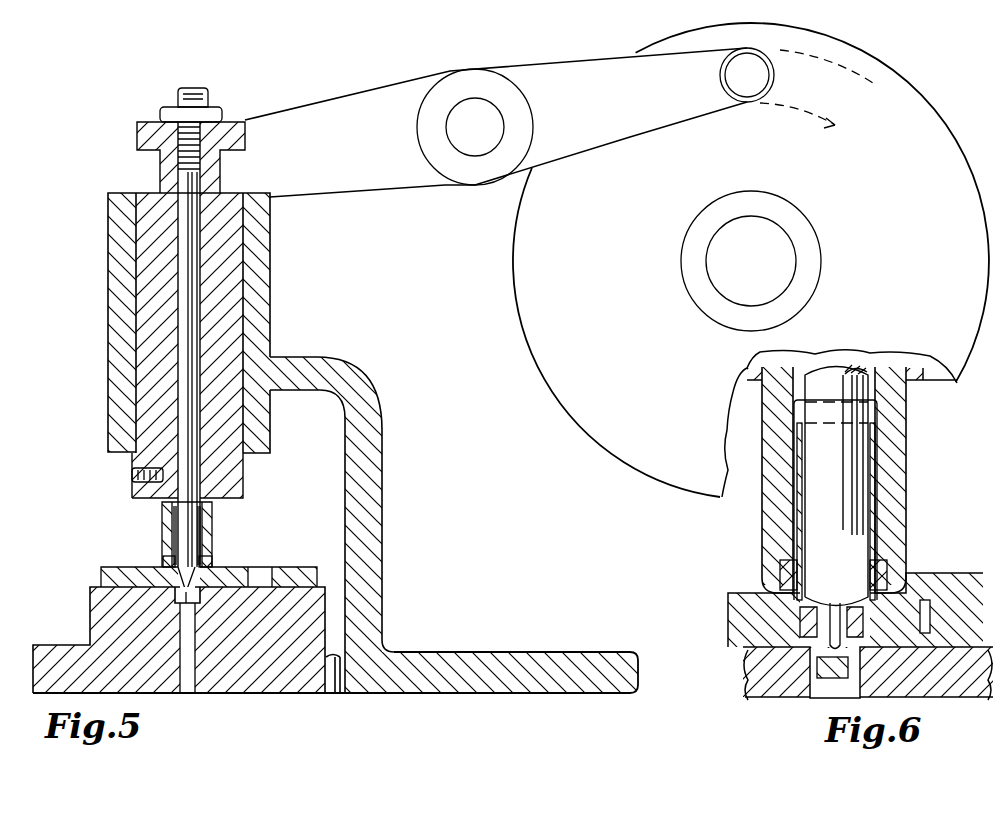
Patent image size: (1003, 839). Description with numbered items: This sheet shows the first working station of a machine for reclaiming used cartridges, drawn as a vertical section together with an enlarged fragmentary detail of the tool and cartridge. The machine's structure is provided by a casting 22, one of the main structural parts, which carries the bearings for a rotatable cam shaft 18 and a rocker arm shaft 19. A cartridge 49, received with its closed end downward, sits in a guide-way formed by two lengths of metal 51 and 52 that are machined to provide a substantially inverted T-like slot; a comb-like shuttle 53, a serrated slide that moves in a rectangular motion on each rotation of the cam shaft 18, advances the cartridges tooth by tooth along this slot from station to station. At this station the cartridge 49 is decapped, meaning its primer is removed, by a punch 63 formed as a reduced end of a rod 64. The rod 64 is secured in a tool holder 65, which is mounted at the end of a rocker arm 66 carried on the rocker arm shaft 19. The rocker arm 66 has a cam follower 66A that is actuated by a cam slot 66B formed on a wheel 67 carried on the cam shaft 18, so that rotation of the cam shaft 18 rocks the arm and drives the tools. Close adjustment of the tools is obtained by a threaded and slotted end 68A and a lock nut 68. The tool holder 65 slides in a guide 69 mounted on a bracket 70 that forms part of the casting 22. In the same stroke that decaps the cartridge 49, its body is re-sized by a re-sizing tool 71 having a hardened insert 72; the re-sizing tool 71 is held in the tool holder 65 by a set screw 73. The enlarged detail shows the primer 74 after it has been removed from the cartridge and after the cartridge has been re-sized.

In FIG. 5, the cam shaft 18 is at (755, 240).
In FIG. 5, the rocker arm shaft 19 is at (475, 128).
In FIG. 5, the casting 22 is at (585, 662).
In FIG. 5, the cartridge 49 is at (202, 515).
In FIG. 6, the cartridge 49 is at (875, 473).
In FIG. 5, the length of metal of guide-way 51 is at (106, 567).
In FIG. 5, the length of metal of guide-way 52 is at (302, 575).
In FIG. 5, the comb-like shuttle 53 is at (240, 578).
In FIG. 5, the punch 63 is at (198, 593).
In FIG. 6, the punch 63 is at (827, 638).
In FIG. 5, the rod 64 is at (188, 292).
In FIG. 6, the rod 64 is at (823, 368).
In FIG. 5, the tool holder 65 is at (228, 224).
In FIG. 5, the rocker arm 66 is at (330, 115).
In FIG. 5, the cam follower 66A is at (775, 77).
In FIG. 5, the cam slot 66B is at (830, 126).
In FIG. 5, the wheel 67 is at (877, 62).
In FIG. 5, the lock nut 68 is at (160, 115).
In FIG. 5, the threaded and slotted end 68A is at (191, 92).
In FIG. 5, the guide 69 is at (258, 318).
In FIG. 5, the bracket 70 is at (368, 418).
In FIG. 5, the re-sizing tool 71 is at (165, 513).
In FIG. 6, the re-sizing tool 71 is at (904, 508).
In FIG. 5, the hardened insert 72 is at (207, 560).
In FIG. 6, the hardened insert 72 is at (783, 562).
In FIG. 5, the set screw 73 is at (132, 474).
In FIG. 6, the primer 74 is at (818, 674).